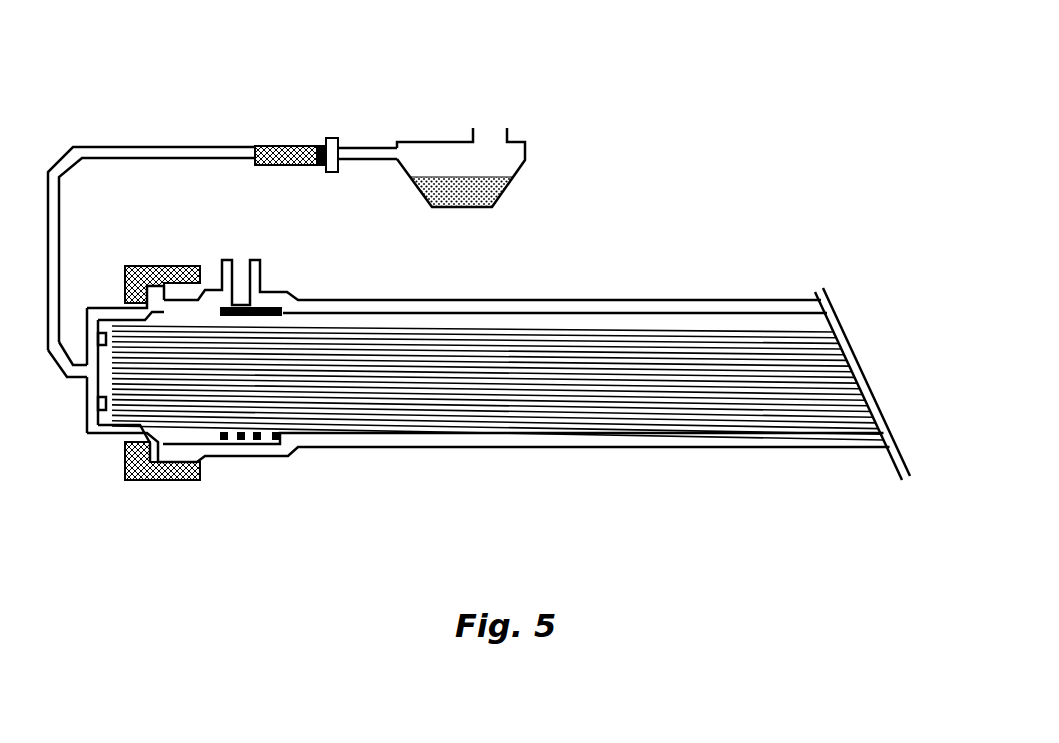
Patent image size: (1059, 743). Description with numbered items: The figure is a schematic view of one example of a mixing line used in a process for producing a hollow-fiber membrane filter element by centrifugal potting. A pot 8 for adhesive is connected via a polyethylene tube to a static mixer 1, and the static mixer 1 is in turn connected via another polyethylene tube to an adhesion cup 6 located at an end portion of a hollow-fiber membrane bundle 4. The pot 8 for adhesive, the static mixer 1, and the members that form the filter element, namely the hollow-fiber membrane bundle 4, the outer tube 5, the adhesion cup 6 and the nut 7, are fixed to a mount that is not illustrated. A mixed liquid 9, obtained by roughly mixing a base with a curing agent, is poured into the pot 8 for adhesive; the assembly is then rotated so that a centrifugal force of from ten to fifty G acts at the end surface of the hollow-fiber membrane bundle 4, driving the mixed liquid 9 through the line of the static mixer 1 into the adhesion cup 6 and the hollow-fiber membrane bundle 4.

The static mixer 1 is at (291, 142).
The hollow-fiber membrane bundle 4 is at (366, 400).
The outer tube 5 is at (599, 454).
The adhesion cup 6 is at (100, 304).
The nut 7 is at (158, 483).
The pot for adhesive 8 is at (420, 140).
The mixed liquid 9 is at (484, 172).